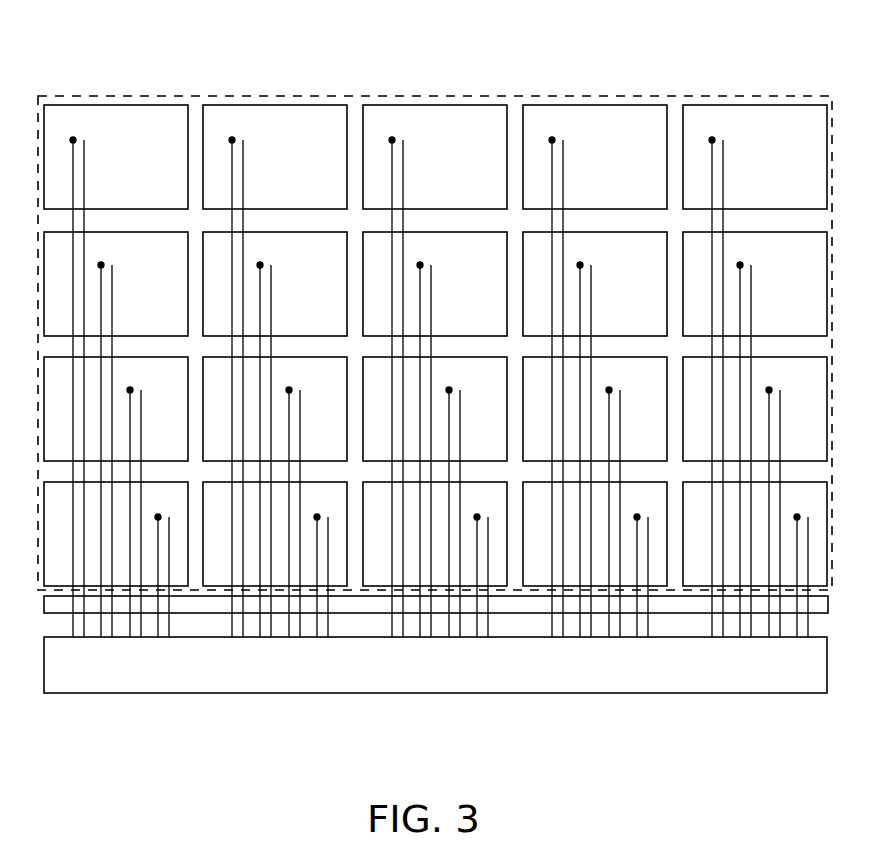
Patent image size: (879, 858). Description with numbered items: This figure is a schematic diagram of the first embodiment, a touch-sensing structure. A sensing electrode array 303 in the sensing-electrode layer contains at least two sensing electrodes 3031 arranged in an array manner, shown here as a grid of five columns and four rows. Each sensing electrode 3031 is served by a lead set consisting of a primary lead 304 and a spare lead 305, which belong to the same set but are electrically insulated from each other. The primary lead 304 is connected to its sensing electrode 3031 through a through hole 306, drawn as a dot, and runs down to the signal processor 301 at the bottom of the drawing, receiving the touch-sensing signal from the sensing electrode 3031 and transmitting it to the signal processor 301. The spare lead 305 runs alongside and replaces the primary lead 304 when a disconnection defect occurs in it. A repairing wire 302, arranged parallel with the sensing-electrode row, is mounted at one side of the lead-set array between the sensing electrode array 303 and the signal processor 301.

The signal processor 301 is at (155, 693).
The repairing wire 302 is at (57, 613).
The sensing electrode array 303 is at (83, 95).
The sensing electrode 3031 is at (287, 105).
The primary lead 304 is at (232, 165).
The spare lead 305 is at (243, 182).
The through hole 306 is at (232, 140).